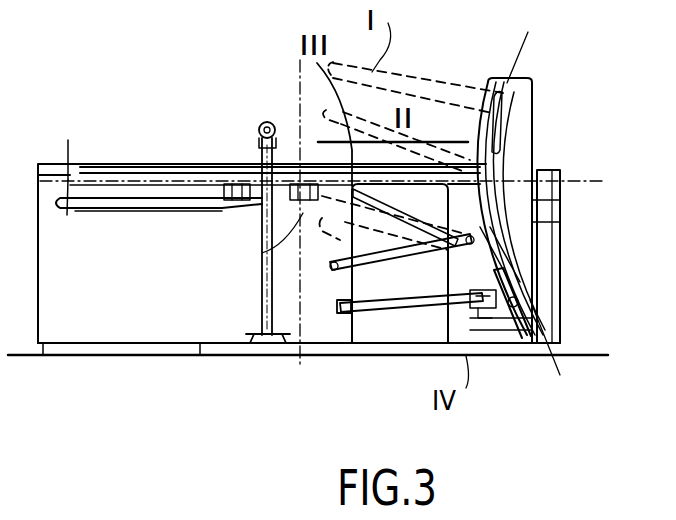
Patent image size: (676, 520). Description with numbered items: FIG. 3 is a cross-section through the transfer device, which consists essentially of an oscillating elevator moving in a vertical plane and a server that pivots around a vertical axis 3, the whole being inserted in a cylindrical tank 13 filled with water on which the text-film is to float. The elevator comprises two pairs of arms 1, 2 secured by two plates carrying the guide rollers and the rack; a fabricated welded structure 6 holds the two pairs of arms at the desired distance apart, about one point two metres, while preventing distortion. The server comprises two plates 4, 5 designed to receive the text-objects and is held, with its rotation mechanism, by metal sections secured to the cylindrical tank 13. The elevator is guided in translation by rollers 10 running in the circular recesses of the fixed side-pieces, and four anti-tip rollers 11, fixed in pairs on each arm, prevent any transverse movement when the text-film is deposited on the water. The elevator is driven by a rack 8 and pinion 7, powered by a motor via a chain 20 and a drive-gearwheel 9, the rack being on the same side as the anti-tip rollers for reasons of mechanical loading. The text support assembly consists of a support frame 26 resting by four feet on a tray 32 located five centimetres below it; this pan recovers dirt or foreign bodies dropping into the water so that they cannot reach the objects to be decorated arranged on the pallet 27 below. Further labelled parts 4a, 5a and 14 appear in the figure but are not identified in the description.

The pair of arms 1 is at (350, 232).
The pair of arms 2 is at (338, 320).
The vertical axis 3 is at (262, 292).
The plate 4 is at (137, 212).
The slide block 4a is at (262, 251).
The plate 5 is at (300, 165).
The guide rail 5a is at (128, 170).
The fabricated welded structure 6 is at (537, 282).
The pinion 7 is at (540, 321).
The rack 8 is at (540, 212).
The drive-gearwheel 9 is at (540, 150).
The rollers 10 is at (560, 298).
The anti-tip rollers 11 is at (523, 350).
The cylindrical tank 13 is at (200, 357).
The roller 14 is at (262, 128).
The chain 20 is at (562, 172).
The support frame 26 is at (68, 140).
The pallet 27 is at (421, 298).
The tray 32 is at (67, 215).